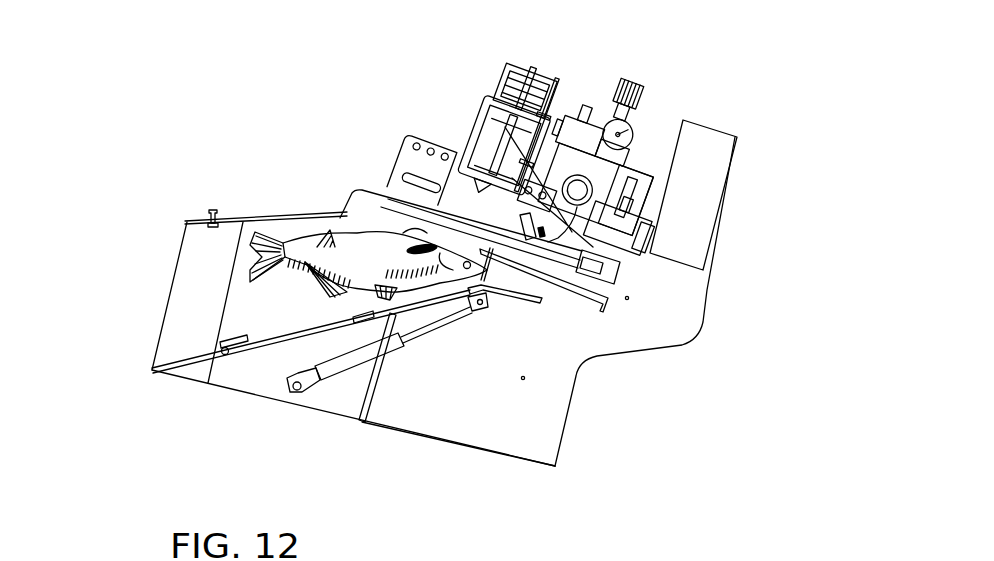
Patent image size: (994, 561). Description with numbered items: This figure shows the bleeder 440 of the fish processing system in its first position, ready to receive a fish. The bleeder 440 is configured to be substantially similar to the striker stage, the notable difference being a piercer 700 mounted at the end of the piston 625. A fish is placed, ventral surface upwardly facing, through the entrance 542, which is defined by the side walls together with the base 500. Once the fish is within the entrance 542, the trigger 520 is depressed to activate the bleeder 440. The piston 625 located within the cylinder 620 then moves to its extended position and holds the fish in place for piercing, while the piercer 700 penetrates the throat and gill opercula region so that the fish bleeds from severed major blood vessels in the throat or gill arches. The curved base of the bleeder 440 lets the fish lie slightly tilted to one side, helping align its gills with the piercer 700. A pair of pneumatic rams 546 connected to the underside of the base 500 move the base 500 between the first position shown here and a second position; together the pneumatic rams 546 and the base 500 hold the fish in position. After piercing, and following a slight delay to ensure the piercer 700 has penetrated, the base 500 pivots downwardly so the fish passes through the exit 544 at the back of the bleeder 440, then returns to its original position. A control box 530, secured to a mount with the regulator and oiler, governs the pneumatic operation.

The bleeder 440 is at (748, 88).
The base 500 is at (263, 338).
The trigger 520 is at (607, 307).
The control box 530 is at (708, 170).
The entrance 542 is at (159, 307).
The exit 544 is at (603, 408).
The pneumatic rams 546 is at (337, 370).
The cylinder 620 is at (497, 84).
The piston 625 is at (471, 153).
The piercer 700 is at (422, 198).